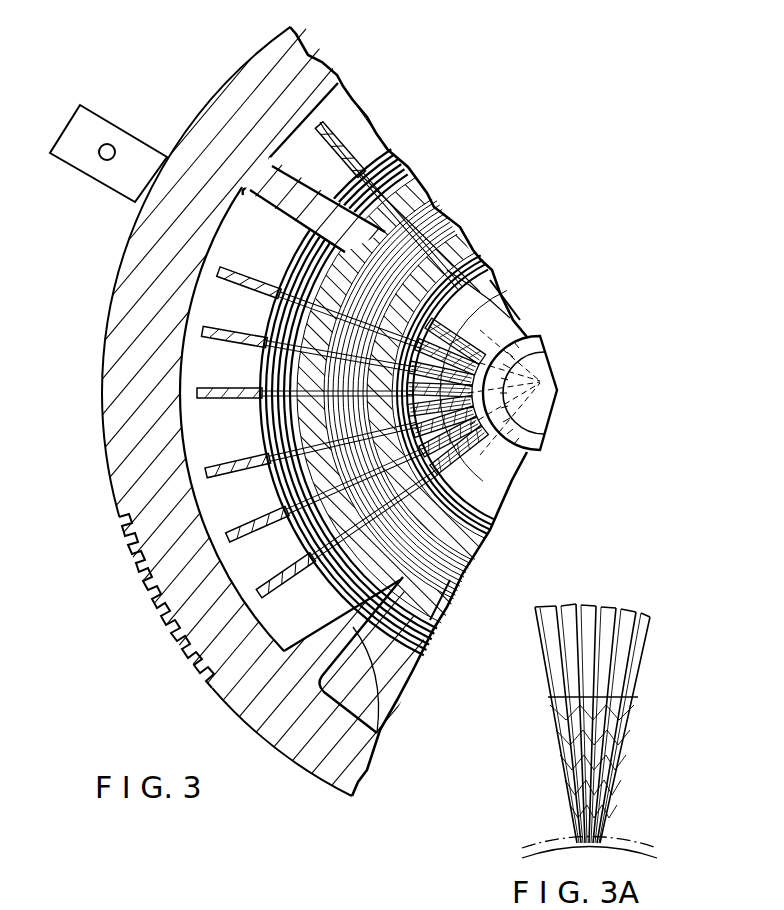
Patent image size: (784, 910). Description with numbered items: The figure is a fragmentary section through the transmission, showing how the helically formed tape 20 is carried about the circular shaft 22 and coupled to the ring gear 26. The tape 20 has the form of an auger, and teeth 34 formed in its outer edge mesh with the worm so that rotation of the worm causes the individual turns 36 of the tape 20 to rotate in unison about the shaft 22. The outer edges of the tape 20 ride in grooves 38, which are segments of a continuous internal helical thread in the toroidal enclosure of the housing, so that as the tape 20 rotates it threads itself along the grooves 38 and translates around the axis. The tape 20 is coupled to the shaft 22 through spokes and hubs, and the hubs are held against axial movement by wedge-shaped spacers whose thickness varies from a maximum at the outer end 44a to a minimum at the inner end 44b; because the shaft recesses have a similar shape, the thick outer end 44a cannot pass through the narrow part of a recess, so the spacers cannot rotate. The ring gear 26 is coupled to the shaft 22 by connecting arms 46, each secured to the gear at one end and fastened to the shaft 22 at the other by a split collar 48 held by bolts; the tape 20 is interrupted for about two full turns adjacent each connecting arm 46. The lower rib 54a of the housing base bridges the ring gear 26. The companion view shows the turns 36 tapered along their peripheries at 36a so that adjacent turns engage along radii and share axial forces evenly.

In FIG. 3, the helically formed tape 20 is at (358, 166).
In FIG. 3, the circular shaft 22 is at (446, 568).
In FIG. 3, the ring gear 26 is at (356, 768).
In FIG. 3, the teeth 34 is at (545, 381).
In FIG. 3, the turns 36 is at (496, 292).
In FIG. 3A, the turns 36 is at (633, 687).
In FIG. 3A, the tapers 36a is at (613, 763).
In FIG. 3, the grooves 38 is at (205, 400).
In FIG. 3, the outer end of spacer 44a is at (387, 223).
In FIG. 3, the inner end of spacer 44b is at (447, 270).
In FIG. 3, the connecting arm 46 is at (293, 192).
In FIG. 3, the split collar 48 is at (488, 280).
In FIG. 3, the lower rib 54a is at (135, 152).